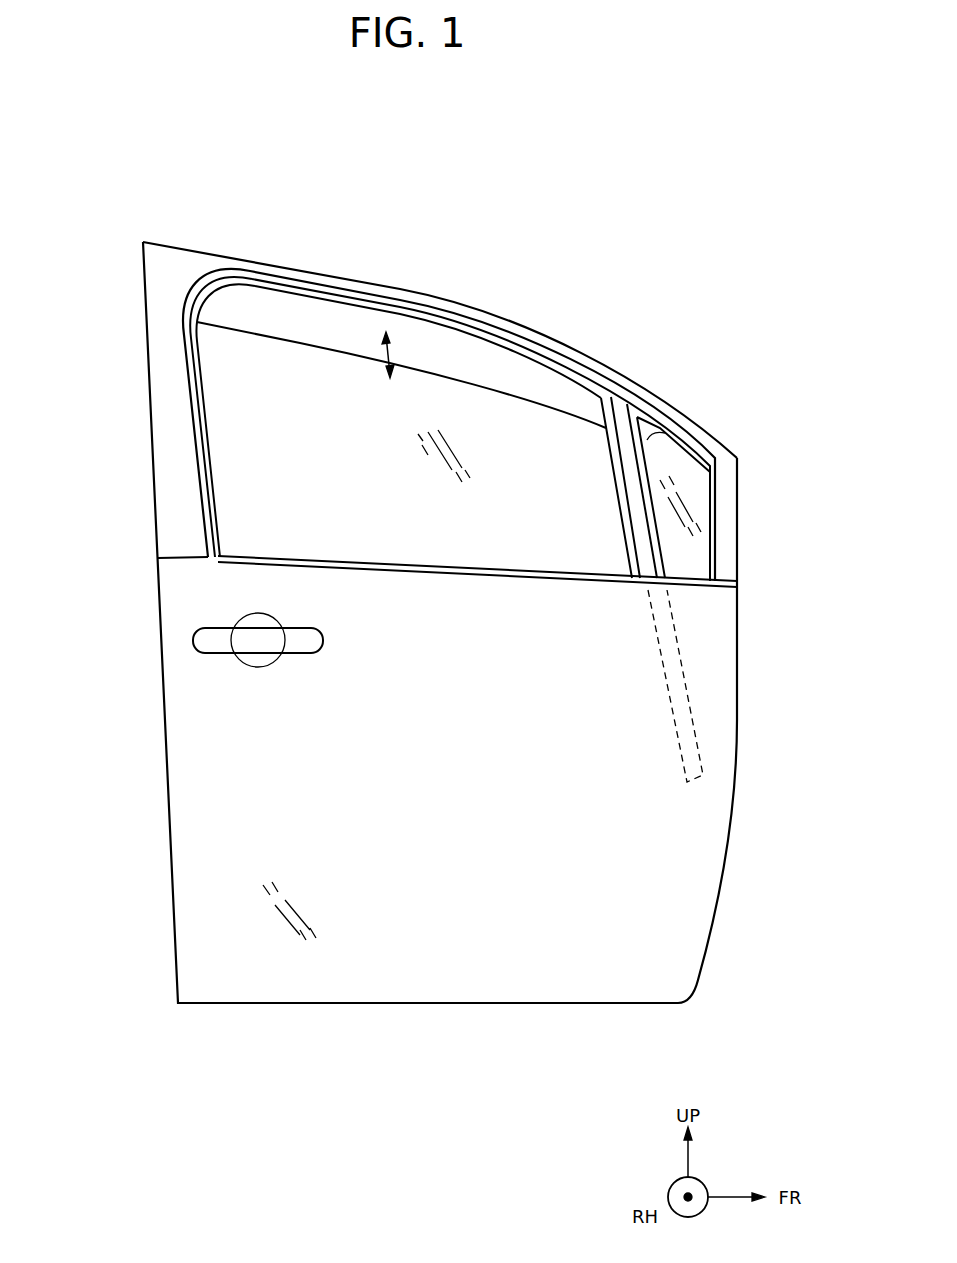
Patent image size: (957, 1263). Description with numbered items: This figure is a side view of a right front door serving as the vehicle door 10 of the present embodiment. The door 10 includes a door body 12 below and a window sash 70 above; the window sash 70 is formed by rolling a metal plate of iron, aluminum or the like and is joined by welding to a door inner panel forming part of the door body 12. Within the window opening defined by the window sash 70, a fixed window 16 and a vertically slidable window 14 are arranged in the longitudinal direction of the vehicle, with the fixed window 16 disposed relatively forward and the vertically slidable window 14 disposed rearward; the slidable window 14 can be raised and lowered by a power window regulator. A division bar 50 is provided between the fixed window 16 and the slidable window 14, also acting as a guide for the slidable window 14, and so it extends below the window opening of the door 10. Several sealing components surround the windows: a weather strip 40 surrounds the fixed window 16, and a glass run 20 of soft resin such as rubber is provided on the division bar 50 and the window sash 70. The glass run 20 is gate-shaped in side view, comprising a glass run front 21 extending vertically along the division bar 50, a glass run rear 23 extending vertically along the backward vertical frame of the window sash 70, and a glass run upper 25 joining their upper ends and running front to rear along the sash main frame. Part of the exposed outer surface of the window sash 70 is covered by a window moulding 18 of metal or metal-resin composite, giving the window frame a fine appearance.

The vehicle door 10 is at (482, 1034).
The door body 12 is at (232, 803).
The vertically slidable window 14 is at (257, 478).
The fixed window 16 is at (703, 503).
The window moulding 18 is at (553, 360).
The glass run 20 is at (499, 359).
The glass run front 21 is at (613, 468).
The glass run rear 23 is at (203, 402).
The glass run upper 25 is at (312, 297).
The weather strip for the fixed window 40 is at (673, 572).
The division bar 50 is at (640, 527).
The window sash 70 is at (182, 270).